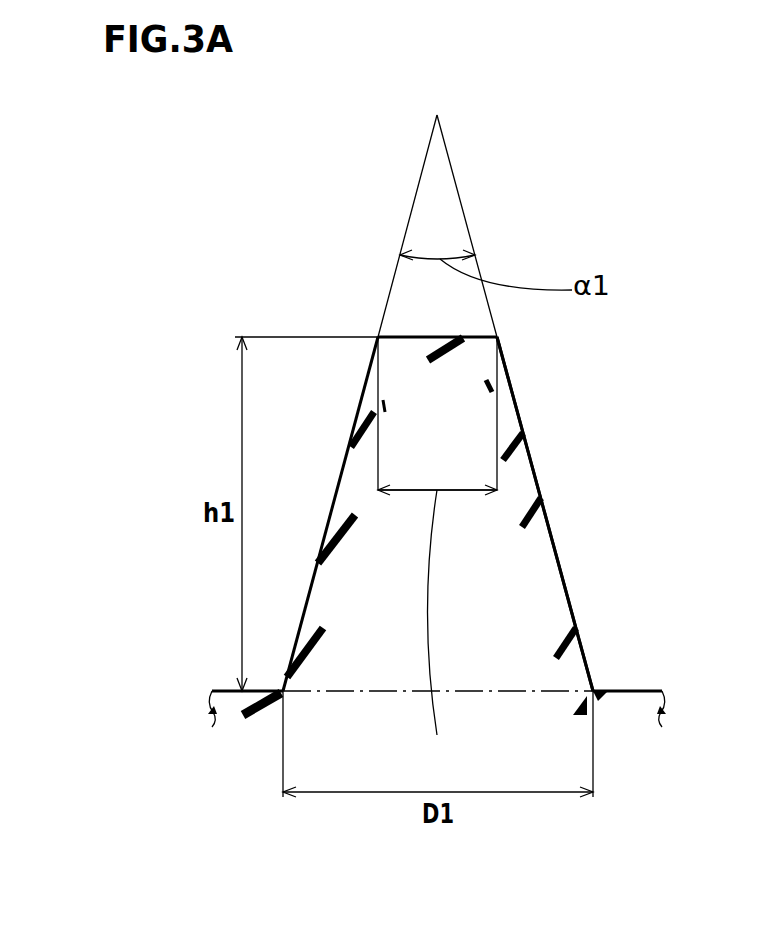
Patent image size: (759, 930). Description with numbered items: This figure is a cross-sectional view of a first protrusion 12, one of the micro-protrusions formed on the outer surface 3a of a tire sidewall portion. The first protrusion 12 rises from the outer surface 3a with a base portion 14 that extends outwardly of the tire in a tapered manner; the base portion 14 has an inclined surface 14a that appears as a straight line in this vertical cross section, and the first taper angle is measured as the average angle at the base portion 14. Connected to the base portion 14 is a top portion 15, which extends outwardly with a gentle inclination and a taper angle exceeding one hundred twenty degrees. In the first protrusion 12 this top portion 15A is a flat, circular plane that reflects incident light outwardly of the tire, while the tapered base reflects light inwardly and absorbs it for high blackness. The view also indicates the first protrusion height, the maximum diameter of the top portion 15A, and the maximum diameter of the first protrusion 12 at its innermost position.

The first protrusion 12 is at (577, 385).
The base portion 14 is at (550, 532).
The inclined surface 14a is at (547, 477).
The top portion 15 is at (418, 336).
The top portion of first protrusion 15A is at (432, 323).
The outer surface of sidewall portion 3a is at (627, 691).